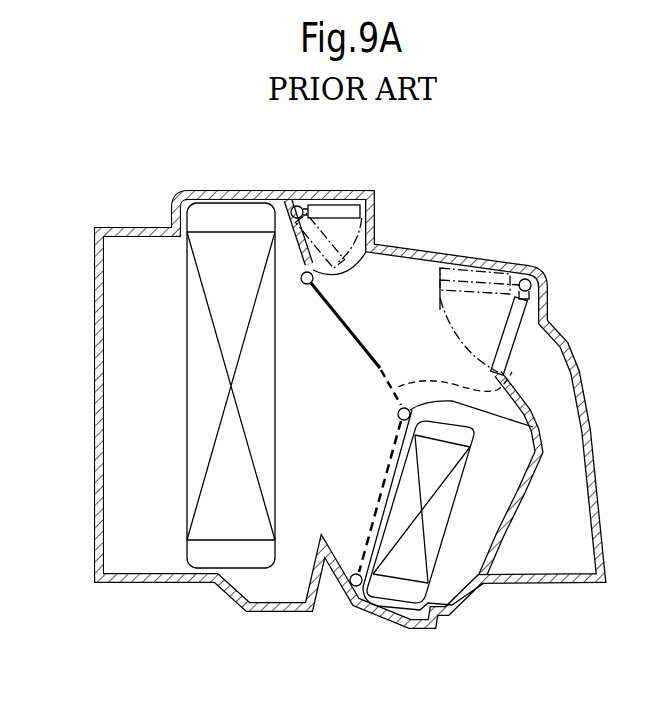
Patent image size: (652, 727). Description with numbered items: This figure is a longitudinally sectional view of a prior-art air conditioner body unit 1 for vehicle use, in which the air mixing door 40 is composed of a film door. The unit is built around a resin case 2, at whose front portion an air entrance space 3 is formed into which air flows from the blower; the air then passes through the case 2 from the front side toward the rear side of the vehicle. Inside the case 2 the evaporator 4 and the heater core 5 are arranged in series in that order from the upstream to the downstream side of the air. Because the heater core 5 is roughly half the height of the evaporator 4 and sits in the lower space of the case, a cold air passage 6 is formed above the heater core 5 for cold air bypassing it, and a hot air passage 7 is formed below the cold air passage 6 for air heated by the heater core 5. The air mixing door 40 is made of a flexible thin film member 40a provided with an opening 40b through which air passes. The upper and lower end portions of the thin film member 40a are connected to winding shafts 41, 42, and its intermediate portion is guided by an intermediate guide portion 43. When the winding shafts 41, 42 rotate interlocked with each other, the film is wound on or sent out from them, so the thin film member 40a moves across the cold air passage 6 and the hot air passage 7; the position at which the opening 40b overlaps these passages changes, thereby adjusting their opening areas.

The air conditioner body unit 1 is at (237, 186).
The case 2 is at (192, 190).
The air entrance space 3 is at (127, 260).
The evaporator 4 is at (212, 400).
The heater core 5 is at (435, 522).
The cold air passage 6 is at (395, 352).
The hot air passage 7 is at (381, 533).
The air mixing door 40 is at (368, 350).
The thin film member 40a is at (352, 320).
The opening 40b is at (512, 372).
The winding shaft 41 is at (373, 248).
The winding shaft 42 is at (355, 587).
The intermediate guide portion 43 is at (543, 429).